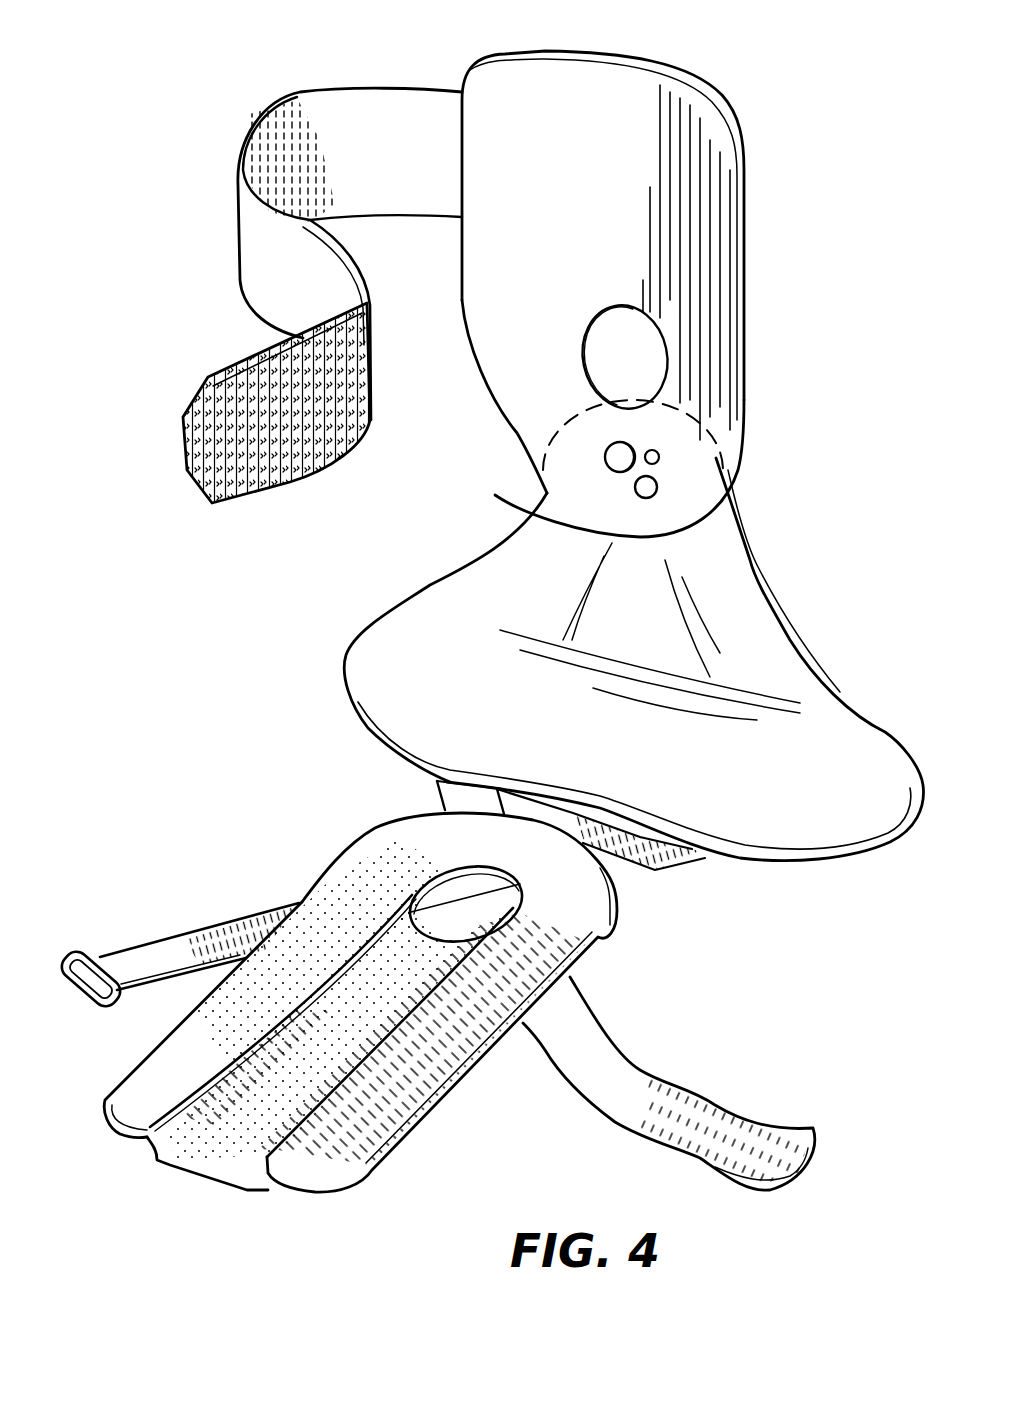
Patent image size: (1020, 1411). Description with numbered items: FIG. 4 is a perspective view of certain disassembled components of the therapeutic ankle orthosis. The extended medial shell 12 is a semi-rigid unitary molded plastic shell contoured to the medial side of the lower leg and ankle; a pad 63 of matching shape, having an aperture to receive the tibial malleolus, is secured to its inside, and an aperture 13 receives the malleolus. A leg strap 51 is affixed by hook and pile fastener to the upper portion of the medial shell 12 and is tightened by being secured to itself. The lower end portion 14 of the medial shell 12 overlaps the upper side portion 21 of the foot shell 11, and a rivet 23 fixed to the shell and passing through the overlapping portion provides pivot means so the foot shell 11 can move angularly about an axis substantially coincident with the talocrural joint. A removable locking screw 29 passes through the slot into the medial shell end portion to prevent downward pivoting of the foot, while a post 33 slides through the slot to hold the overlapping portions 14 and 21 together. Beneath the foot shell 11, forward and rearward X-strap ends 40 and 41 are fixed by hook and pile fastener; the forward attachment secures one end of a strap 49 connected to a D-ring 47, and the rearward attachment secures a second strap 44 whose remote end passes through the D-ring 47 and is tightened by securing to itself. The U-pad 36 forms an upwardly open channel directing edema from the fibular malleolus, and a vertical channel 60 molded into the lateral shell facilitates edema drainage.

The foot shell 11 is at (800, 729).
The medial shell 12 is at (775, 300).
The aperture 13 is at (478, 918).
The lower end portion 14 is at (695, 537).
The upper side portion 21 is at (532, 521).
The rivet 23 is at (605, 468).
The locking screw 29 is at (658, 462).
The post 33 is at (640, 497).
The U-pad 36 is at (425, 1074).
The forward X-strap end 40 is at (717, 855).
The rearward X-strap end 41 is at (437, 777).
The second strap 44 is at (442, 800).
The D-ring 47 is at (80, 987).
The strap 49 is at (193, 940).
The leg strap 51 is at (312, 108).
The vertical channel 60 is at (240, 1135).
The pad 63 is at (703, 350).